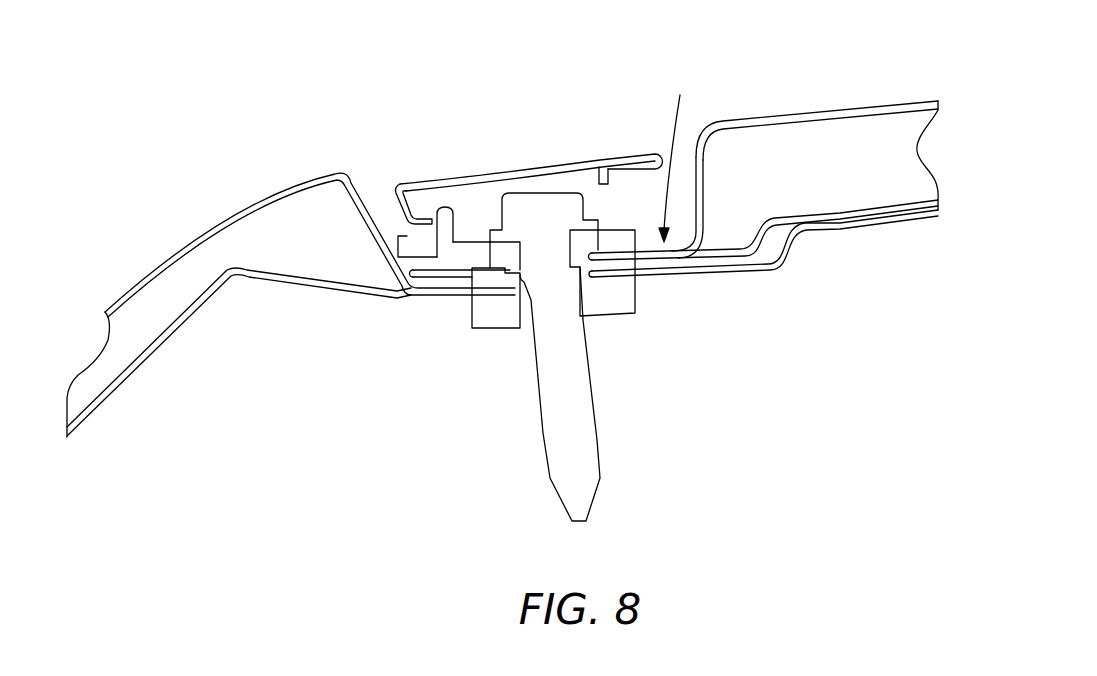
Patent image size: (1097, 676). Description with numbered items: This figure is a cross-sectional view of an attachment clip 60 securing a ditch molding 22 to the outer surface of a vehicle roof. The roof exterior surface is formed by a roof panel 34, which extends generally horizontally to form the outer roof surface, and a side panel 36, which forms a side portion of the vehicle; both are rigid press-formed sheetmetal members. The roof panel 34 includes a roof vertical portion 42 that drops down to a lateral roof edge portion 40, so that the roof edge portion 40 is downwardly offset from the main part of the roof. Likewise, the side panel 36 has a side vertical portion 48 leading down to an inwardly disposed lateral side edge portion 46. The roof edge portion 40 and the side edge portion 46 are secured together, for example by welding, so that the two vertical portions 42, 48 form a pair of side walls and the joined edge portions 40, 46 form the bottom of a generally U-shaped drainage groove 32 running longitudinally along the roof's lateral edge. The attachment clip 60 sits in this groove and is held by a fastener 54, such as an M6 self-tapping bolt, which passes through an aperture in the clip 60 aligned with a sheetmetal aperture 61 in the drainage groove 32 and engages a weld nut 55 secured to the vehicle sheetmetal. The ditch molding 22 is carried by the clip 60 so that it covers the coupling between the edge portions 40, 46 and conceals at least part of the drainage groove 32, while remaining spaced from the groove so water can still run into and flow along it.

The ditch molding 22 is at (530, 163).
The drainage groove 32 is at (676, 154).
The roof panel 34 is at (858, 106).
The side panel 36 is at (203, 232).
The roof edge portion 40 is at (653, 250).
The roof vertical portion 42 is at (707, 182).
The lateral side edge portion 46 is at (455, 290).
The side vertical portion 48 is at (368, 226).
The fastener 54 is at (578, 427).
The weld nut 55 is at (625, 297).
The attachment clip 60 is at (421, 262).
The sheetmetal aperture 61 is at (513, 317).